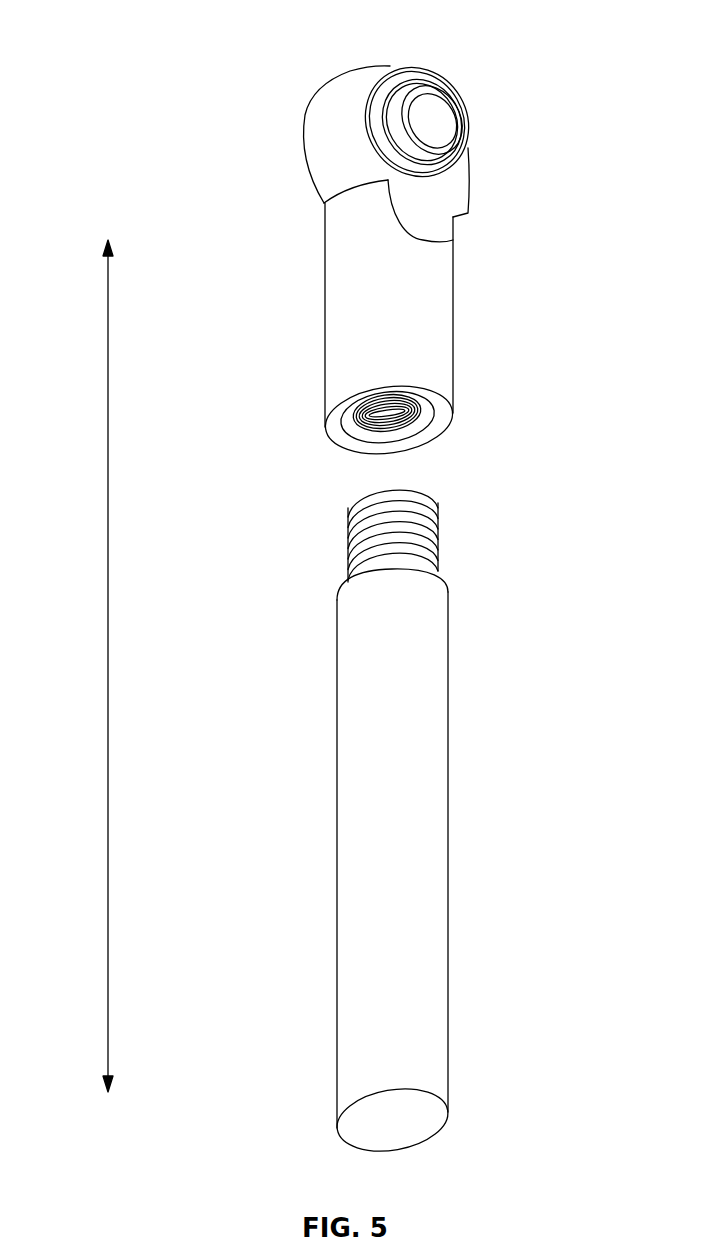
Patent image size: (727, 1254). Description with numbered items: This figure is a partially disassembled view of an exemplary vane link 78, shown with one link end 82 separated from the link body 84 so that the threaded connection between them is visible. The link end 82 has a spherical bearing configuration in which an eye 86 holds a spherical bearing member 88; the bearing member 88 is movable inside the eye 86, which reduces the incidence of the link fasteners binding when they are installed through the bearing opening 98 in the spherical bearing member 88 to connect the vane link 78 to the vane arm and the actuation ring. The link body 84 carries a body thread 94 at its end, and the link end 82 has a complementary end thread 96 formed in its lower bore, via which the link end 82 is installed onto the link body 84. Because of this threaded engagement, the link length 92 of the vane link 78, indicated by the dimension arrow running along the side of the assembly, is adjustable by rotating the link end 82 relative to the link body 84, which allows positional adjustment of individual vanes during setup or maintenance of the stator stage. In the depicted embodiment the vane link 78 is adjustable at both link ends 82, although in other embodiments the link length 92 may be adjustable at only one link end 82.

The vane link 78 is at (500, 752).
The link end 82 is at (440, 308).
The link body 84 is at (358, 745).
The eye 86 is at (462, 180).
The spherical bearing member 88 is at (383, 122).
The link length 92 is at (108, 650).
The body thread 94 is at (360, 545).
The end thread 96 is at (380, 405).
The bearing opening 98 is at (428, 120).